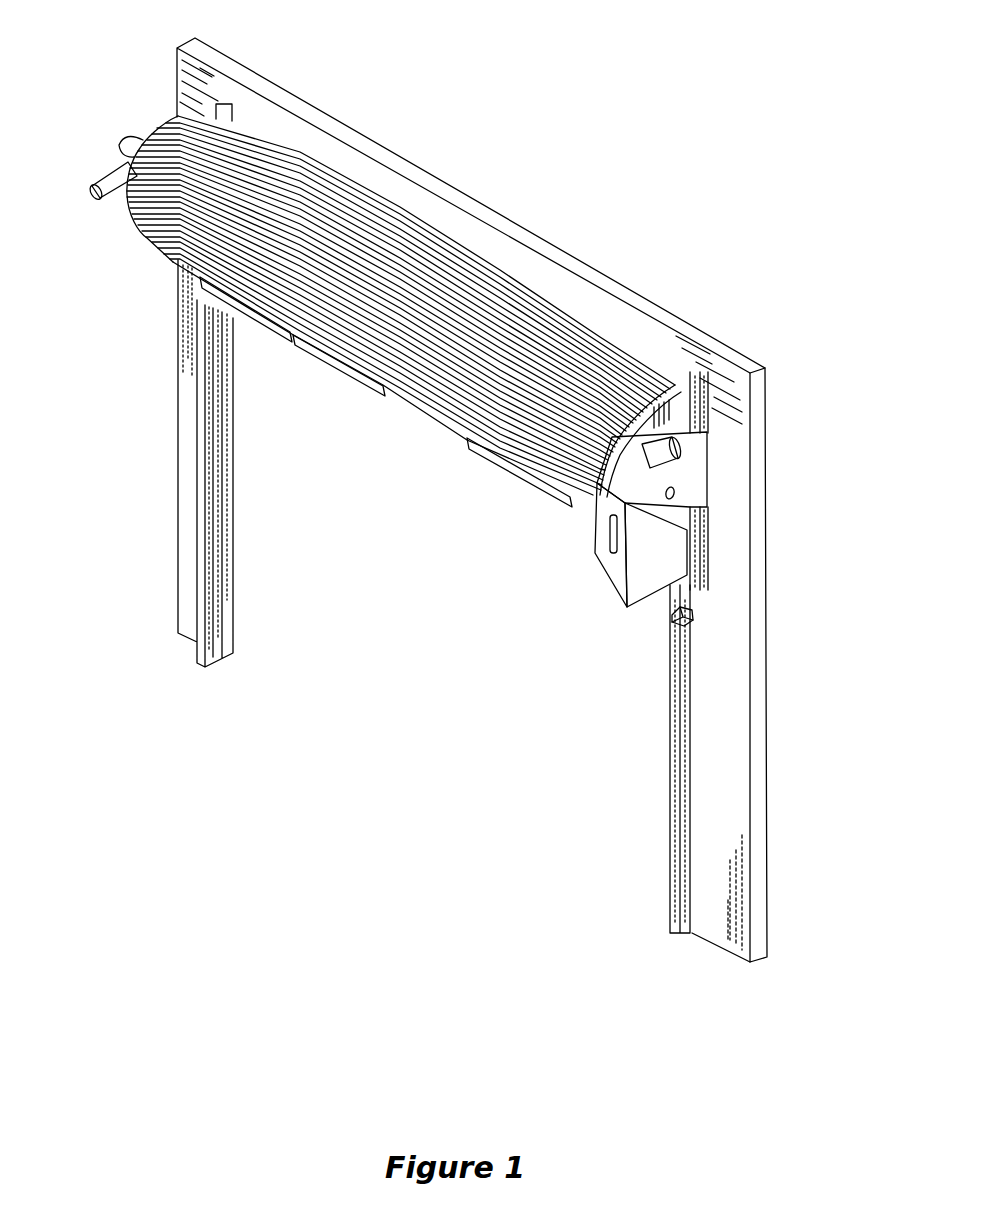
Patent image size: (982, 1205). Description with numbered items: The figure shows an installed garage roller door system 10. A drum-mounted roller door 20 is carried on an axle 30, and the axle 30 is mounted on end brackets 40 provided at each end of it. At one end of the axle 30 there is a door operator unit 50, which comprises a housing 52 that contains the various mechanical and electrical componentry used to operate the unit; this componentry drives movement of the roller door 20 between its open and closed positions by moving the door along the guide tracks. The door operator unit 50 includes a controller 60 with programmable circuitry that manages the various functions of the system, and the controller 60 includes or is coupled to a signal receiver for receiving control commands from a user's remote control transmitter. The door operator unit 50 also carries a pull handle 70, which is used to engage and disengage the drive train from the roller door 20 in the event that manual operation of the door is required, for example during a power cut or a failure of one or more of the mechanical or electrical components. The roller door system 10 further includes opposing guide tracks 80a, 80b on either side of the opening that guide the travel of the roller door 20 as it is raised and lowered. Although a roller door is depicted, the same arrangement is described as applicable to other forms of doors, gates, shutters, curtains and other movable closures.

The roller door system 10 is at (388, 575).
The roller door 20 is at (445, 397).
The axle 30 is at (123, 140).
The end brackets 40 is at (688, 487).
The door operator unit 50 is at (686, 599).
The housing 52 is at (643, 550).
The controller 60 is at (677, 553).
The pull handle 70 is at (693, 615).
The guide track 80a is at (208, 540).
The guide track 80b is at (672, 870).